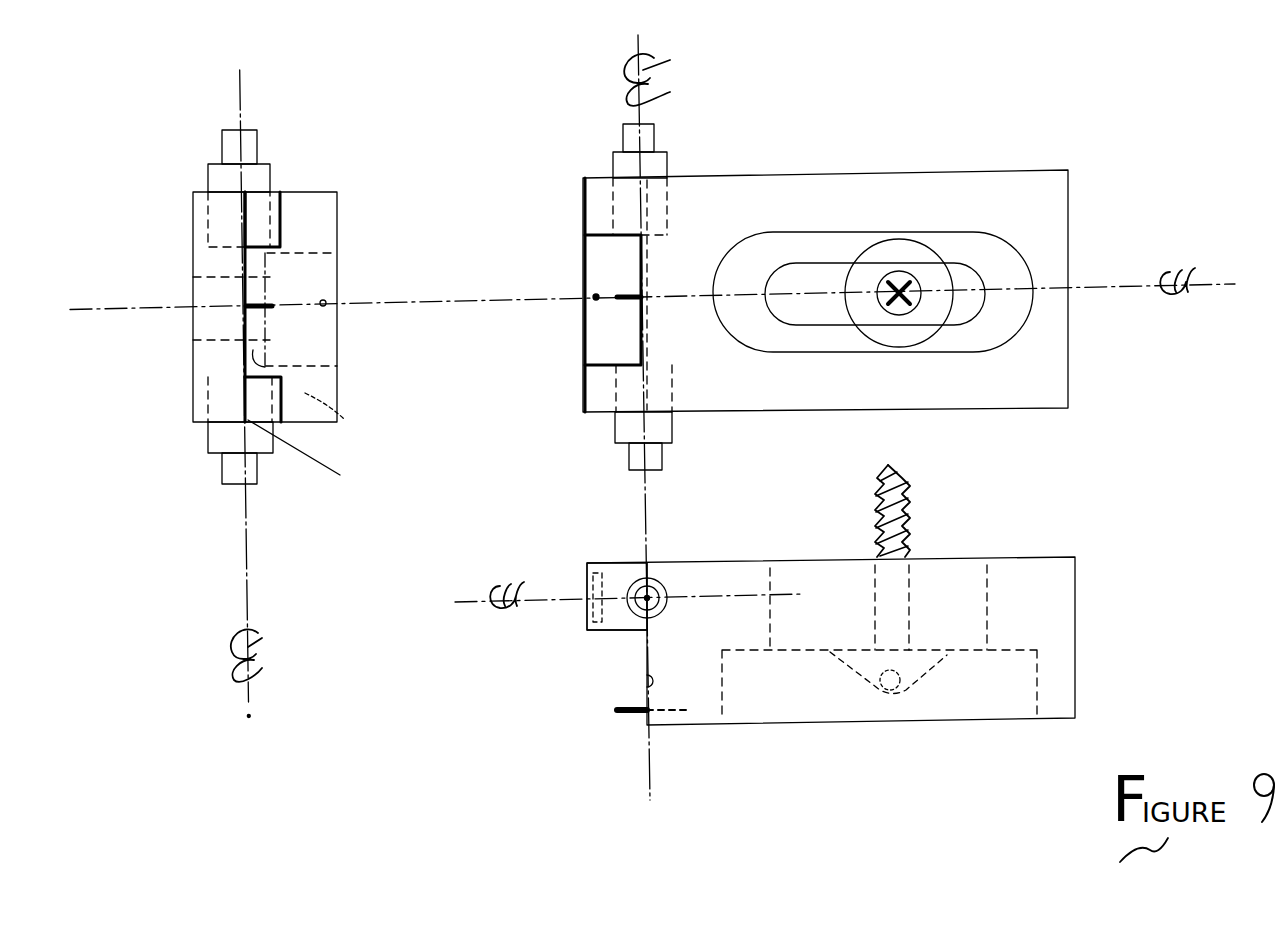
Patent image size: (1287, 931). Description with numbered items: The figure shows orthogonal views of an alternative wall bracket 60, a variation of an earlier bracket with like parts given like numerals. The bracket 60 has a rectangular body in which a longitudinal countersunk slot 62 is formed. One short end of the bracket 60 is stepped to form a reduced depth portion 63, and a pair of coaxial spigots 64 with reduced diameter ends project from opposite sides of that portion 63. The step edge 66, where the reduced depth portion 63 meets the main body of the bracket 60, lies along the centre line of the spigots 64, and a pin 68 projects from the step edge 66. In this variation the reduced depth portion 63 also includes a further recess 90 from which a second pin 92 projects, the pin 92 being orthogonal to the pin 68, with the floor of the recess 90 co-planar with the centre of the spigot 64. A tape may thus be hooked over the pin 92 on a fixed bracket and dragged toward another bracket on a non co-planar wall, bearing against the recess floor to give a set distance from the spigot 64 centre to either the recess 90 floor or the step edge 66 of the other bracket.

The wall bracket 60 is at (773, 200).
The longitudinal countersunk slot 62 is at (828, 248).
The reduced depth portion 63 is at (345, 420).
The coaxial spigots 64 is at (250, 147).
The step edge 66 is at (643, 328).
The pin 68 is at (326, 306).
The recess 90 is at (265, 367).
The second pin 92 is at (250, 303).